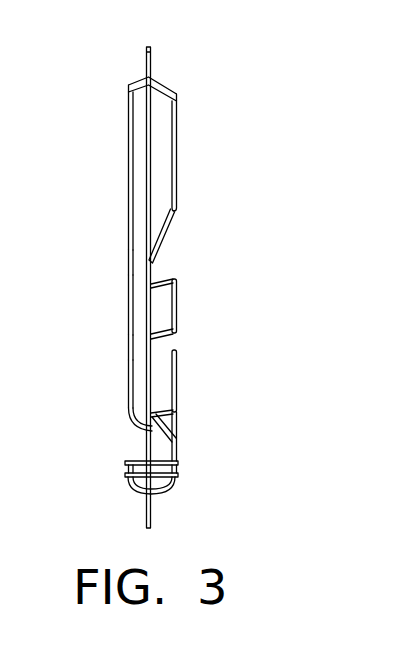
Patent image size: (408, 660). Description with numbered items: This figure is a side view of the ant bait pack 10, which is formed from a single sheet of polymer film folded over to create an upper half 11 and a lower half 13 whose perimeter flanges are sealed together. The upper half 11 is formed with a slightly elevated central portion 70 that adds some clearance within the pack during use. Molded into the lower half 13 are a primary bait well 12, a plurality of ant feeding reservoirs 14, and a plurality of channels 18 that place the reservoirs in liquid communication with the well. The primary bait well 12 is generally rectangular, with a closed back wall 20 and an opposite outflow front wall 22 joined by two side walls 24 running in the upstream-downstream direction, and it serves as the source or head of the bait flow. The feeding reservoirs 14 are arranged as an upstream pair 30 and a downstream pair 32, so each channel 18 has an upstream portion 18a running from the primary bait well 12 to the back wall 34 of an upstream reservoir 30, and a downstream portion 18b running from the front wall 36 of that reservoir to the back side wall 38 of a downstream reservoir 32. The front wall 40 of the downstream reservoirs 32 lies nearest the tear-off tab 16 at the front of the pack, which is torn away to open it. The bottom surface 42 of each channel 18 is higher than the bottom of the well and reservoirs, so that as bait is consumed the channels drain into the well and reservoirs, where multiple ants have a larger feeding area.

The ant bait pack 10 is at (207, 28).
The upper half 11 is at (108, 140).
The primary bait well 12 is at (172, 173).
The lower half 13 is at (189, 137).
The ant feeding reservoirs 14 is at (210, 315).
The tear-off tab 16 is at (151, 518).
The channels 18 is at (192, 244).
The upstream portion of channel 18a is at (128, 262).
The downstream portion of channel 18b is at (128, 345).
The closed back wall 20 is at (162, 80).
The outflow front wall 22 is at (176, 214).
The side walls 24 is at (159, 122).
The upstream pair of ant feeding reservoirs 30 is at (193, 290).
The downstream pair of ant feeding reservoirs 32 is at (200, 428).
The back wall of upstream reservoir 34 is at (153, 263).
The front wall of upstream reservoir 36 is at (173, 338).
The back side wall of downstream reservoir 38 is at (177, 397).
The front wall of downstream reservoir 40 is at (172, 432).
The bottom surface of channel 42 is at (168, 238).
The elevated central portion 70 is at (128, 223).